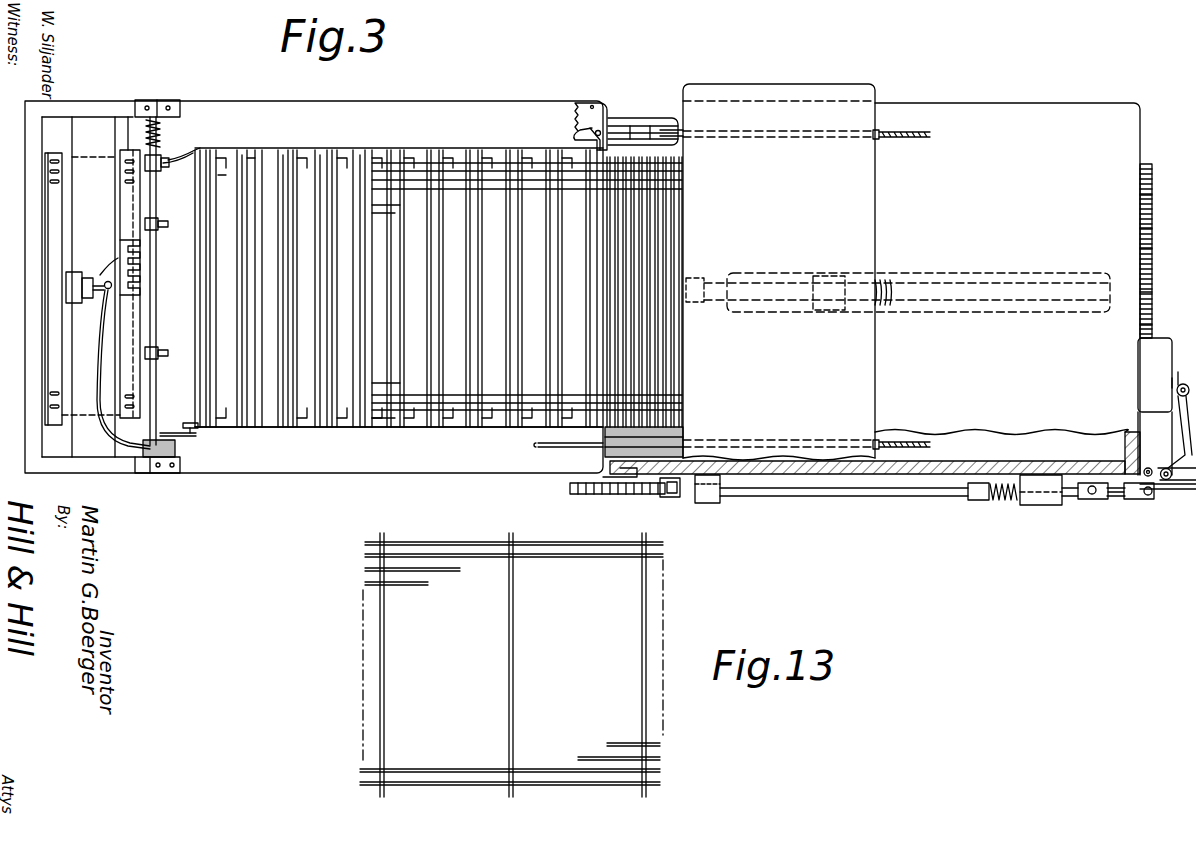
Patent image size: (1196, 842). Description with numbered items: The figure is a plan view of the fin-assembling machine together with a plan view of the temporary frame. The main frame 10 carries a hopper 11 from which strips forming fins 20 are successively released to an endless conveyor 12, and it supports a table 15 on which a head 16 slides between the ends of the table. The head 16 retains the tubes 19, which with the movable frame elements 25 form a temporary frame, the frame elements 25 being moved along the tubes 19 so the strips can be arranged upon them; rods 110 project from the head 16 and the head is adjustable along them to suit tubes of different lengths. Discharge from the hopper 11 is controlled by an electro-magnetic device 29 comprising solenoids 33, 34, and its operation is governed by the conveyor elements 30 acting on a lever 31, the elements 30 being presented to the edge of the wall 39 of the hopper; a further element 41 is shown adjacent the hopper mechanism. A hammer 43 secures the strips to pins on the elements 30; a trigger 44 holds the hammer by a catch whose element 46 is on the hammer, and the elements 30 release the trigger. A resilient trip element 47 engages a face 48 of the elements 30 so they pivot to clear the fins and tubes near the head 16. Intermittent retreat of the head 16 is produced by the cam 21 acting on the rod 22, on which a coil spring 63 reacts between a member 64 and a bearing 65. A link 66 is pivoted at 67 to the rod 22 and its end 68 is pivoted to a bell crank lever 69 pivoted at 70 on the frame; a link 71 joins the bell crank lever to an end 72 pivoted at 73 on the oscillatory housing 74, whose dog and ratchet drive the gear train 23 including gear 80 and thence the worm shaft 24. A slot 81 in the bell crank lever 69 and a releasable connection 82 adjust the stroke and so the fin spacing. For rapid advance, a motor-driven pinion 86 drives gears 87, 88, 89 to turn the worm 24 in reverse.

In FIG. 3, the main frame 10 is at (512, 101).
In FIG. 3, the hopper 11 is at (44, 332).
In FIG. 3, the endless conveyor 12 is at (346, 437).
In FIG. 3, the table 15 is at (871, 290).
In FIG. 3, the head 16 is at (868, 190).
In FIG. 3, the tubes 19 is at (474, 192).
In FIG. 13, the tubes 19 is at (456, 570).
In FIG. 3, the fins 20 is at (278, 240).
In FIG. 3, the tooth element or cam 21 is at (626, 495).
In FIG. 3, the rod 22 is at (828, 497).
In FIG. 3, the gear train 23 is at (1152, 293).
In FIG. 3, the worm shaft 24 is at (895, 305).
In FIG. 3, the movable frame elements 25 is at (668, 396).
In FIG. 13, the movable frame elements 25 is at (384, 635).
In FIG. 3, the electro-magnetic device 29 is at (66, 290).
In FIG. 3, the conveyor elements 30 is at (190, 422).
In FIG. 3, the lever 31 is at (185, 436).
In FIG. 3, the solenoid 33 is at (106, 292).
In FIG. 3, the solenoid 34 is at (104, 278).
In FIG. 3, the wall 39 is at (113, 369).
In FIG. 3, the rack member 41 is at (120, 250).
In FIG. 3, the hammer 43 is at (168, 225).
In FIG. 3, the trigger 44 is at (197, 148).
In FIG. 3, the catch element 46 is at (166, 172).
In FIG. 3, the trip element 47 is at (580, 146).
In FIG. 3, the face of conveyor element 48 is at (618, 140).
In FIG. 3, the coil spring 63 is at (1005, 501).
In FIG. 3, the member 64 is at (976, 501).
In FIG. 3, the bearing 65 is at (1041, 506).
In FIG. 3, the link 66 is at (1116, 500).
In FIG. 3, the pivotal connection 67 is at (1092, 499).
In FIG. 3, the link end 68 is at (1150, 500).
In FIG. 3, the bell crank lever 69 is at (1163, 505).
In FIG. 3, the pivot 70 is at (1152, 470).
In FIG. 3, the link 71 is at (1180, 428).
In FIG. 3, the link end 72 is at (1186, 384).
In FIG. 3, the pivotal connection 73 is at (1177, 394).
In FIG. 3, the oscillatory housing 74 is at (1155, 375).
In FIG. 3, the gear 80 is at (1152, 325).
In FIG. 3, the slot 81 is at (1185, 492).
In FIG. 3, the releasable connection 82 is at (1168, 482).
In FIG. 3, the pinion 86 is at (1152, 168).
In FIG. 3, the gear 87 is at (1152, 194).
In FIG. 3, the gear 88 is at (1152, 228).
In FIG. 3, the gear 89 is at (1152, 262).
In FIG. 3, the rods 110 is at (898, 138).